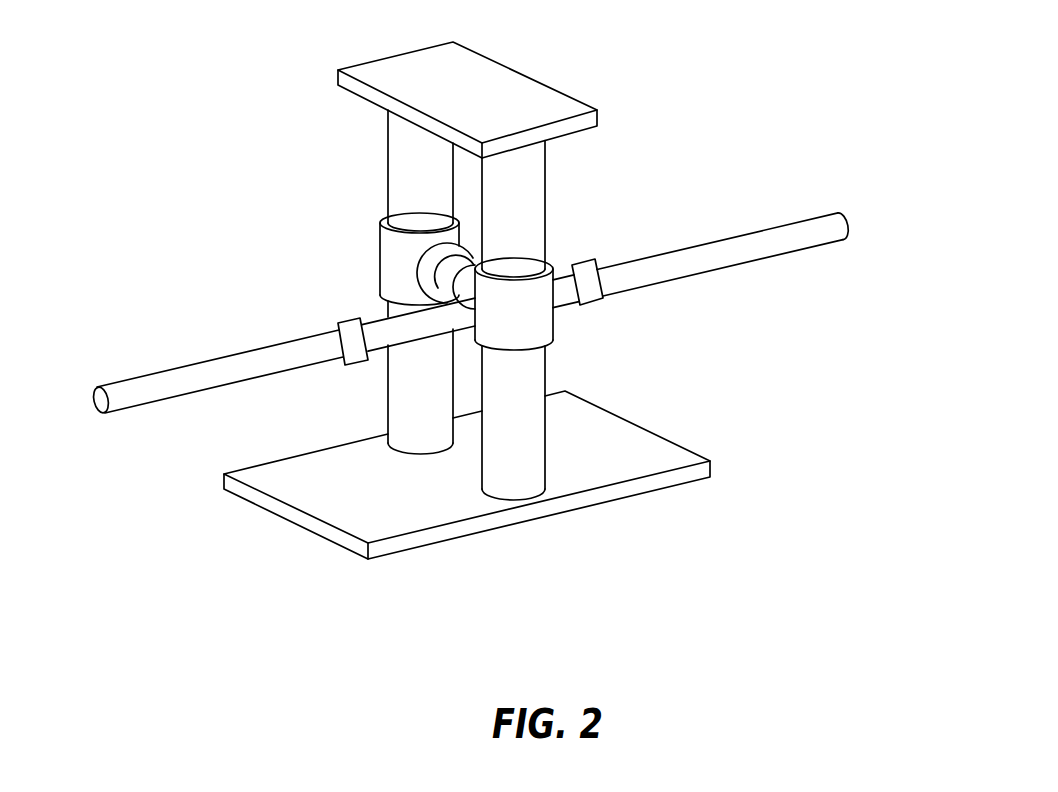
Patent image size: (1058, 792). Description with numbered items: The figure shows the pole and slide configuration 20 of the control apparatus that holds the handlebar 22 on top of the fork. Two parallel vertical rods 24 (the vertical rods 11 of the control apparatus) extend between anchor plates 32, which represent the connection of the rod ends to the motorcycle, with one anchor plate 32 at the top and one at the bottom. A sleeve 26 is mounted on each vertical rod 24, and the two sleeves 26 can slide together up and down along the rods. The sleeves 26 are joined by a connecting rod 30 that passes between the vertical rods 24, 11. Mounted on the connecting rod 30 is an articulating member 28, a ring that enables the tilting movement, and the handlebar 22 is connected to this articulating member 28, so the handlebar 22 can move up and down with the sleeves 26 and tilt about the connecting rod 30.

The pole and slide configuration 20 is at (177, 160).
The vertical rods 11 is at (523, 192).
The handlebar 22 is at (842, 222).
The vertical rods 24 is at (413, 167).
The sleeve 26 is at (393, 238).
The articulating member 28 is at (427, 271).
The connecting rod 30 is at (456, 276).
The anchor plate 32 is at (490, 88).